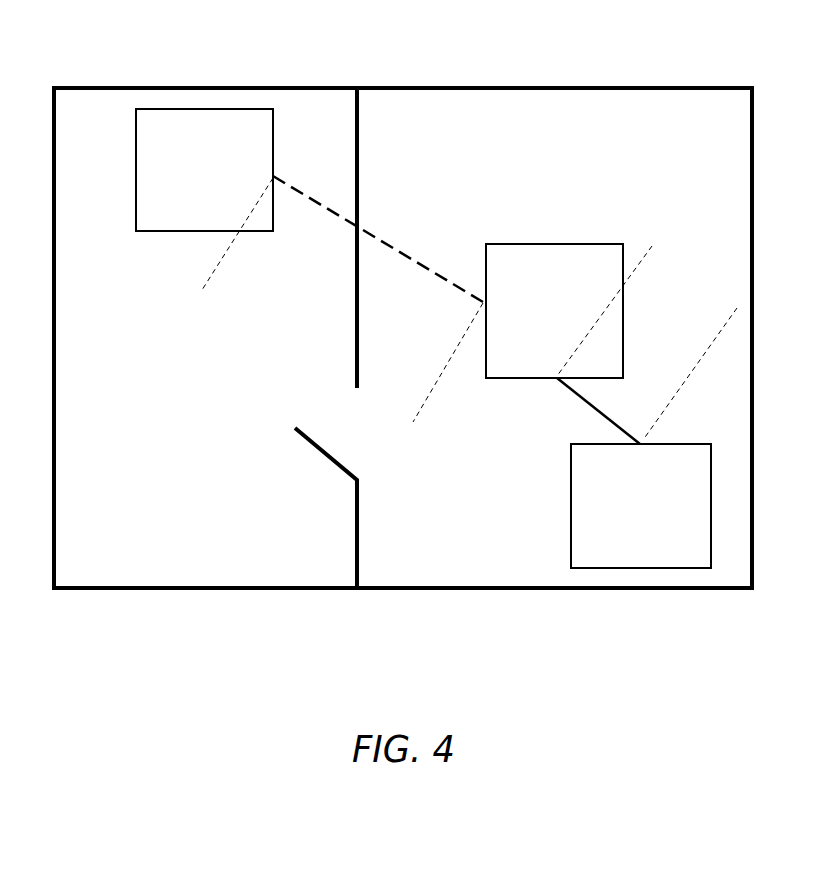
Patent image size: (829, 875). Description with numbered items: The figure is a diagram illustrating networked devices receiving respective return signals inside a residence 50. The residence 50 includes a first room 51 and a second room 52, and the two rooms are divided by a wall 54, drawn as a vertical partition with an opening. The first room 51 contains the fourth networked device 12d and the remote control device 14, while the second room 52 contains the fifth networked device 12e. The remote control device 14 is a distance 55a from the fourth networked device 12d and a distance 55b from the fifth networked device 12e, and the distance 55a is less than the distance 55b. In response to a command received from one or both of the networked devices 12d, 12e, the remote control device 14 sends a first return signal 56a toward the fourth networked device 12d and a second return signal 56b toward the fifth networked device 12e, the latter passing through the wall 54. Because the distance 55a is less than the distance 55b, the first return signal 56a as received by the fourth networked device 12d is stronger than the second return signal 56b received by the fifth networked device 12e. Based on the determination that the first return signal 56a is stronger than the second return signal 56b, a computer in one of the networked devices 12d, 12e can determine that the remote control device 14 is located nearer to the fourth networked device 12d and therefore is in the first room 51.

The residence 50 is at (97, 62).
The first room 51 is at (547, 174).
The second room 52 is at (198, 485).
The wall 54 is at (360, 107).
The fifth networked device 12e is at (204, 170).
The fourth networked device 12d is at (641, 506).
The remote control device 14 is at (554, 311).
The first return signal 56a is at (580, 400).
The second return signal 56b is at (317, 195).
The distance 55a is at (641, 272).
The distance 55b is at (420, 395).